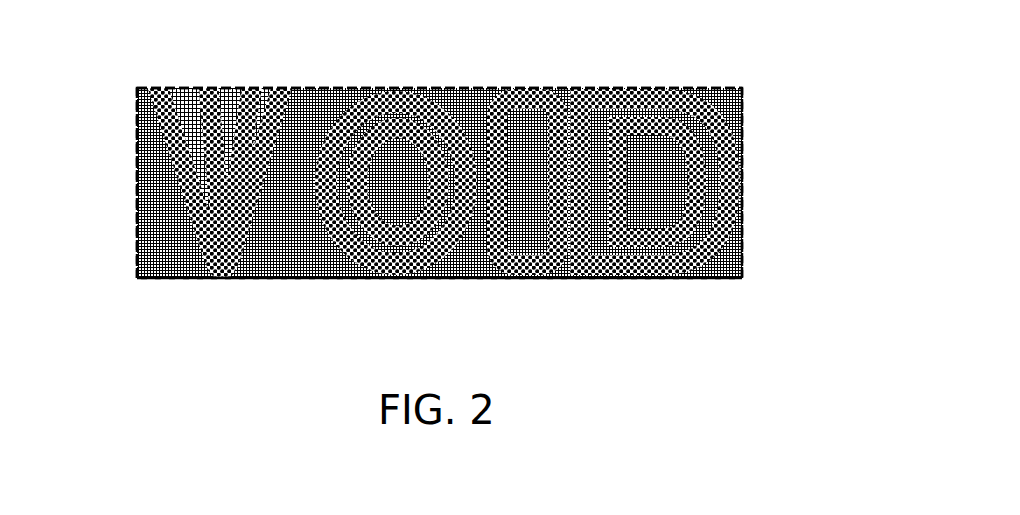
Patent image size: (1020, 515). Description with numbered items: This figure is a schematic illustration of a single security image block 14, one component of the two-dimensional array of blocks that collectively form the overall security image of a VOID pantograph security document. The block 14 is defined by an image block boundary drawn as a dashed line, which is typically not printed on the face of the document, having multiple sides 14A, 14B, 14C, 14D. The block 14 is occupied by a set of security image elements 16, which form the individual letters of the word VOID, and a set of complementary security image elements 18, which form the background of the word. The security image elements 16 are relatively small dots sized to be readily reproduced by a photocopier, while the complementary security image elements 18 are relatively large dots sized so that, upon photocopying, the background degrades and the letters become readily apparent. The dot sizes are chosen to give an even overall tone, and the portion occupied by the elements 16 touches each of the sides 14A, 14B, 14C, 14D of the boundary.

The security image block 14 is at (742, 88).
The side of image block boundary 14A is at (460, 88).
The side of image block boundary 14B is at (745, 165).
The side of image block boundary 14C is at (488, 279).
The side of image block boundary 14D is at (137, 182).
The security image elements 16 is at (282, 88).
The complementary security image elements 18 is at (340, 88).